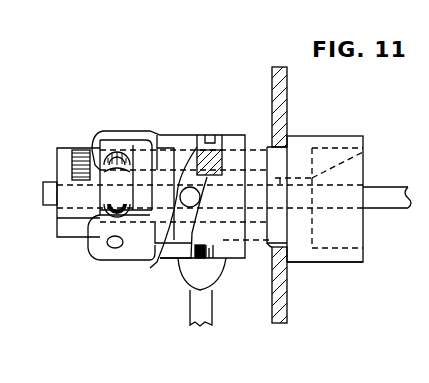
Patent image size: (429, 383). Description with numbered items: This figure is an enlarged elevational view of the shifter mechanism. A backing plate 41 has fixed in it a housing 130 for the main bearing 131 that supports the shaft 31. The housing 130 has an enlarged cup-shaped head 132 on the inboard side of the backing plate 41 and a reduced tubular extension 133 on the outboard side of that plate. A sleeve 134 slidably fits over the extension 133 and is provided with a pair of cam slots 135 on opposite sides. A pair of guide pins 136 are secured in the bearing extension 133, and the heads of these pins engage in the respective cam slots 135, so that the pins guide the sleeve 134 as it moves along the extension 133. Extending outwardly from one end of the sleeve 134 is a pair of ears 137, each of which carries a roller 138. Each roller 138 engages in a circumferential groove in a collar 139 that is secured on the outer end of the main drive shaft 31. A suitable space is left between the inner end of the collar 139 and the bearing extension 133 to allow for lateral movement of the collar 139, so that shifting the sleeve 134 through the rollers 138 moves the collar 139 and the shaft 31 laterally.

The shaft 31 is at (386, 210).
The backing plate 41 is at (288, 112).
The housing 130 is at (325, 272).
The main bearing 131 is at (363, 155).
The cup-shaped head 132 is at (343, 136).
The tubular extension 133 is at (255, 235).
The sleeve 134 is at (172, 140).
The cam slots 135 is at (175, 252).
The guide pins 136 is at (183, 262).
The ears 137 is at (112, 133).
The roller 138 is at (103, 150).
The collar 139 is at (77, 215).